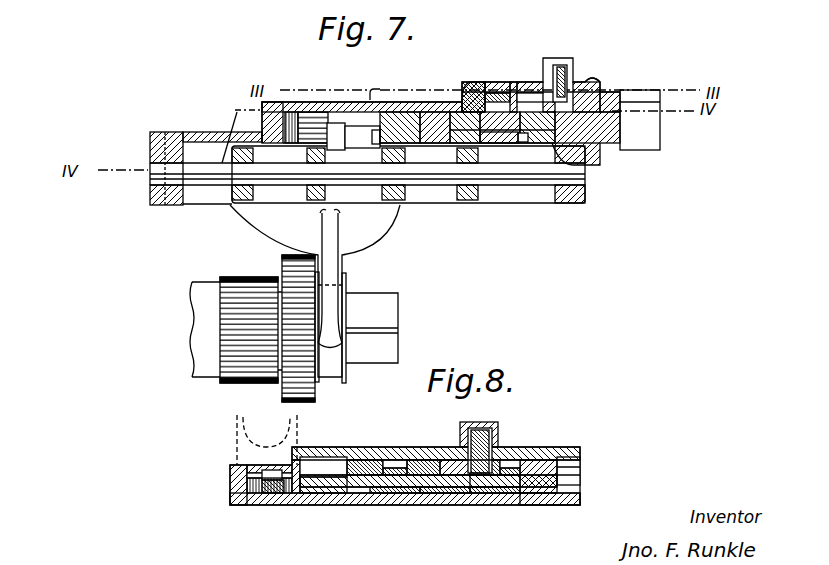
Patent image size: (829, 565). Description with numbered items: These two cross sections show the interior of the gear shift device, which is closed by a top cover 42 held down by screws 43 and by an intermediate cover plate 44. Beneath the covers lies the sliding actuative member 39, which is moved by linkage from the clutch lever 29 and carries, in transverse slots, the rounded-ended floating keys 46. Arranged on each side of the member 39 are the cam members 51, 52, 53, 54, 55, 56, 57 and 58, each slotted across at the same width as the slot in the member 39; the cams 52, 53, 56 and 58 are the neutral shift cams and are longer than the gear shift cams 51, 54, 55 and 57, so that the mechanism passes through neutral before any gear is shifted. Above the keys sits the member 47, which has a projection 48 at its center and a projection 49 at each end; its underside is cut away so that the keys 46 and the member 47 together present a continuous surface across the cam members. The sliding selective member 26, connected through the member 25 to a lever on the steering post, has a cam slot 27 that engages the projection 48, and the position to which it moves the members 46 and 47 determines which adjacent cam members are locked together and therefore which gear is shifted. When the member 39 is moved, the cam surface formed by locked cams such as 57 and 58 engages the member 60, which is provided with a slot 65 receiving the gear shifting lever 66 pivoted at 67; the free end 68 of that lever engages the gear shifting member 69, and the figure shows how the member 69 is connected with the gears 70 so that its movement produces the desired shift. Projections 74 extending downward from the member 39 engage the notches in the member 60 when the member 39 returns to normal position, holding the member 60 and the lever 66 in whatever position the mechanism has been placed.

In FIG. 7, the member 25 is at (568, 70).
In FIG. 8, the member 25 is at (492, 438).
In FIG. 7, the sliding selective member 26 is at (514, 98).
In FIG. 8, the sliding selective member 26 is at (415, 458).
In FIG. 7, the cam slot 27 is at (540, 92).
In FIG. 8, the clutch lever 29 is at (460, 483).
In FIG. 7, the sliding actuative member 39 is at (507, 128).
In FIG. 7, the top cover 42 is at (500, 96).
In FIG. 7, the screws 43 is at (598, 82).
In FIG. 7, the intermediate cover plate 44 is at (318, 110).
In FIG. 8, the intermediate cover plate 44 is at (327, 457).
In FIG. 8, the floating keys 46 is at (432, 481).
In FIG. 8, the member 47 is at (580, 468).
In FIG. 8, the projection 48 is at (448, 460).
In FIG. 8, the projection 49 is at (373, 458).
In FIG. 8, the cam member 51 is at (517, 493).
In FIG. 8, the cam member 52 is at (487, 490).
In FIG. 7, the cam member 53 is at (613, 143).
In FIG. 7, the cam member 54 is at (575, 131).
In FIG. 7, the cam member 55 is at (458, 118).
In FIG. 7, the cam member 56 is at (482, 105).
In FIG. 8, the cam member 57 is at (383, 488).
In FIG. 8, the cam member 58 is at (410, 487).
In FIG. 7, the member 60 is at (393, 117).
In FIG. 7, the slot 65 is at (350, 123).
In FIG. 8, the gear shifting lever 66 is at (280, 493).
In FIG. 8, the pivot 67 is at (243, 477).
In FIG. 7, the free end 68 is at (360, 130).
In FIG. 7, the gear shifting member 69 is at (250, 216).
In FIG. 7, the gears 70 is at (295, 287).
In FIG. 7, the projections 74 is at (525, 142).